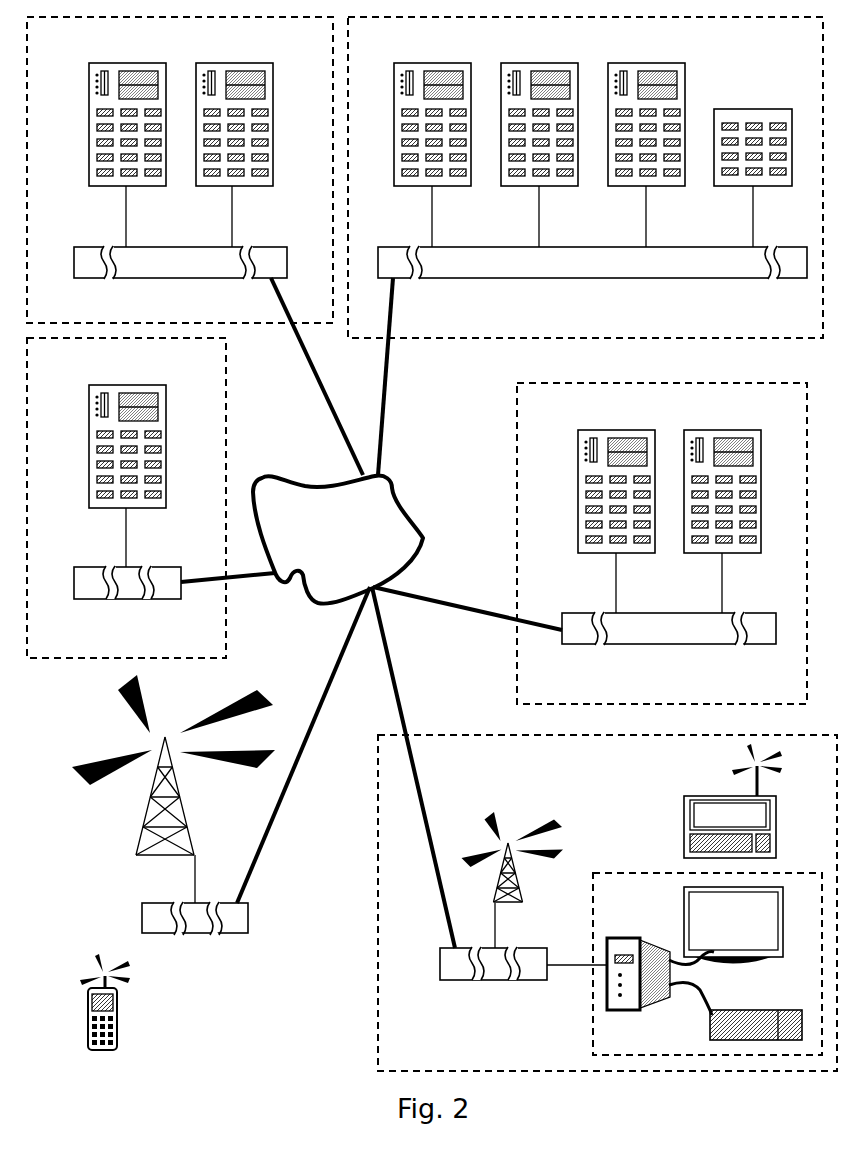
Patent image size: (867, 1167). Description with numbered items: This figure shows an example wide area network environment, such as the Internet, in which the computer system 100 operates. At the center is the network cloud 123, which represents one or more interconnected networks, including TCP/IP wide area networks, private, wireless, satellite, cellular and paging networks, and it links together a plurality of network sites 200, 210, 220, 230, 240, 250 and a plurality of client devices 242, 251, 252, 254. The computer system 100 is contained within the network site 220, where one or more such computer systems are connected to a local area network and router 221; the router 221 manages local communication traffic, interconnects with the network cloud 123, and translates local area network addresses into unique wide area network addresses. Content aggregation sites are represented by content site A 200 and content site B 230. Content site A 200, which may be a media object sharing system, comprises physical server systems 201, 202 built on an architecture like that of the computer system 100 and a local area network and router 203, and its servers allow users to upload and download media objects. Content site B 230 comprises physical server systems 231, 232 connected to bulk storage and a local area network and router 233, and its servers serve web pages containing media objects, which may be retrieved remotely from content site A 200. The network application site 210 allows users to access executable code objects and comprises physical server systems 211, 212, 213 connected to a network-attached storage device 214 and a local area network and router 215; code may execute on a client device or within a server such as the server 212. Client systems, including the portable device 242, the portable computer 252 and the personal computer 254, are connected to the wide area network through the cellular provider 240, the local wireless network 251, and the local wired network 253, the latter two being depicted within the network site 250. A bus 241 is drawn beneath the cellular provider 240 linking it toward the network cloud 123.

The computer system 100 is at (98, 508).
The network cloud 123 is at (425, 538).
The content site A 200 is at (232, 323).
The physical server system 201 is at (98, 187).
The physical server system 202 is at (205, 187).
The local area network and router 203 is at (258, 248).
The network application site 210 is at (410, 338).
The physical server system 211 is at (415, 187).
The physical server system 212 is at (523, 187).
The physical server system 213 is at (630, 187).
The network-attached storage device 214 is at (737, 187).
The local area network and router 215 is at (490, 278).
The network site 220 is at (228, 599).
The router 221 is at (150, 599).
The content site B 230 is at (517, 648).
The physical server system 231 is at (585, 554).
The physical server system 232 is at (690, 554).
The local area network and router 233 is at (628, 645).
The cellular provider 240 is at (137, 856).
The wireless tower bus 241 is at (230, 934).
The portable device 242 is at (88, 1010).
The network site 250 is at (379, 890).
The local wireless network 251 is at (520, 873).
The portable computer 252 is at (684, 810).
The local wired network 253 is at (451, 981).
The personal computer 254 is at (593, 1010).